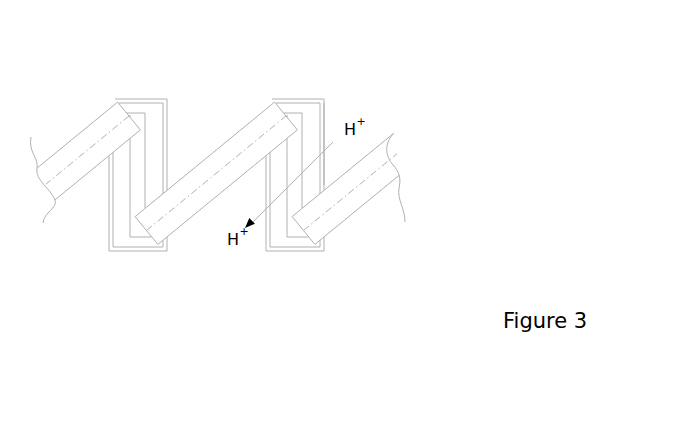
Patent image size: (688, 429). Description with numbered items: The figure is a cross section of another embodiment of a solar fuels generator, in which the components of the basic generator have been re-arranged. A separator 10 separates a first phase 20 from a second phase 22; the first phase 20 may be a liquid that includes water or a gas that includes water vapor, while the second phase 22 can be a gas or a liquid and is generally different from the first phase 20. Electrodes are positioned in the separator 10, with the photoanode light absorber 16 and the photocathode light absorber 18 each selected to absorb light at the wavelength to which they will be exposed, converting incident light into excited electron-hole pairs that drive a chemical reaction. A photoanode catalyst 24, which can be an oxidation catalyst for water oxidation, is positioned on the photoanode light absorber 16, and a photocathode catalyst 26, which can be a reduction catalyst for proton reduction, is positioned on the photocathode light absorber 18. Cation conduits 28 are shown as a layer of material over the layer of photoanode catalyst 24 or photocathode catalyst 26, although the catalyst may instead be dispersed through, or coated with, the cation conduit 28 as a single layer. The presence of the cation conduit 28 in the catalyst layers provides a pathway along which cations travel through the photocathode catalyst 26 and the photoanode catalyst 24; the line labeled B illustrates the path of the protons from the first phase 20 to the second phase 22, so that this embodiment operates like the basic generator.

The separator 10 is at (210, 174).
The photoanode light absorber 16 is at (82, 140).
The photocathode light absorber 18 is at (82, 173).
The first phase 20 is at (431, 56).
The second phase 22 is at (297, 384).
The photoanode catalyst 24 is at (155, 145).
The photocathode catalyst 26 is at (122, 237).
The cation conduit 28 is at (138, 99).
The path of the protons B is at (331, 143).